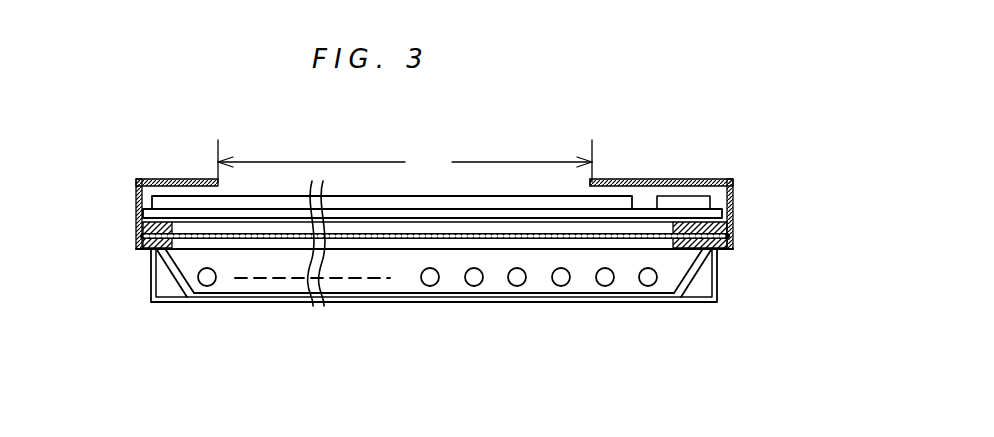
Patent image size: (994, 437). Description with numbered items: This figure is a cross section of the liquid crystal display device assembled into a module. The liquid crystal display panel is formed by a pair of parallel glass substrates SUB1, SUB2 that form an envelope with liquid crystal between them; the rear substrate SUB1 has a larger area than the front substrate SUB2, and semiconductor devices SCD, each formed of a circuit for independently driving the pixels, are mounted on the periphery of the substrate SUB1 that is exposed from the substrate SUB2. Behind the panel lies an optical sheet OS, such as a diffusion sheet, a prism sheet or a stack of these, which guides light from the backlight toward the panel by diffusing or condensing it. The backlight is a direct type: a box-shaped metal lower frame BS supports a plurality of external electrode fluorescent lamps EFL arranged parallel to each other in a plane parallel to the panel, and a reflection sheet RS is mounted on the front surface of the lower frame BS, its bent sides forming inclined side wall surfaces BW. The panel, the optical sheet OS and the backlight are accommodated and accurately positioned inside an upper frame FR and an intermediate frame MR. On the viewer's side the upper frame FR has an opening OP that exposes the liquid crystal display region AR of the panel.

The upper frame FR is at (733, 195).
The substrate SUB2 is at (172, 202).
The substrate SUB1 is at (160, 214).
The semiconductor device SCD is at (684, 200).
The intermediate frame MR is at (730, 240).
The optical sheet OS is at (267, 239).
The lower frame BS is at (622, 305).
The reflection sheet RS is at (352, 290).
The side wall surface BW is at (172, 275).
The external electrode fluorescent lamp EFL is at (474, 287).
The liquid crystal display region AR is at (405, 161).
The opening OP is at (590, 181).